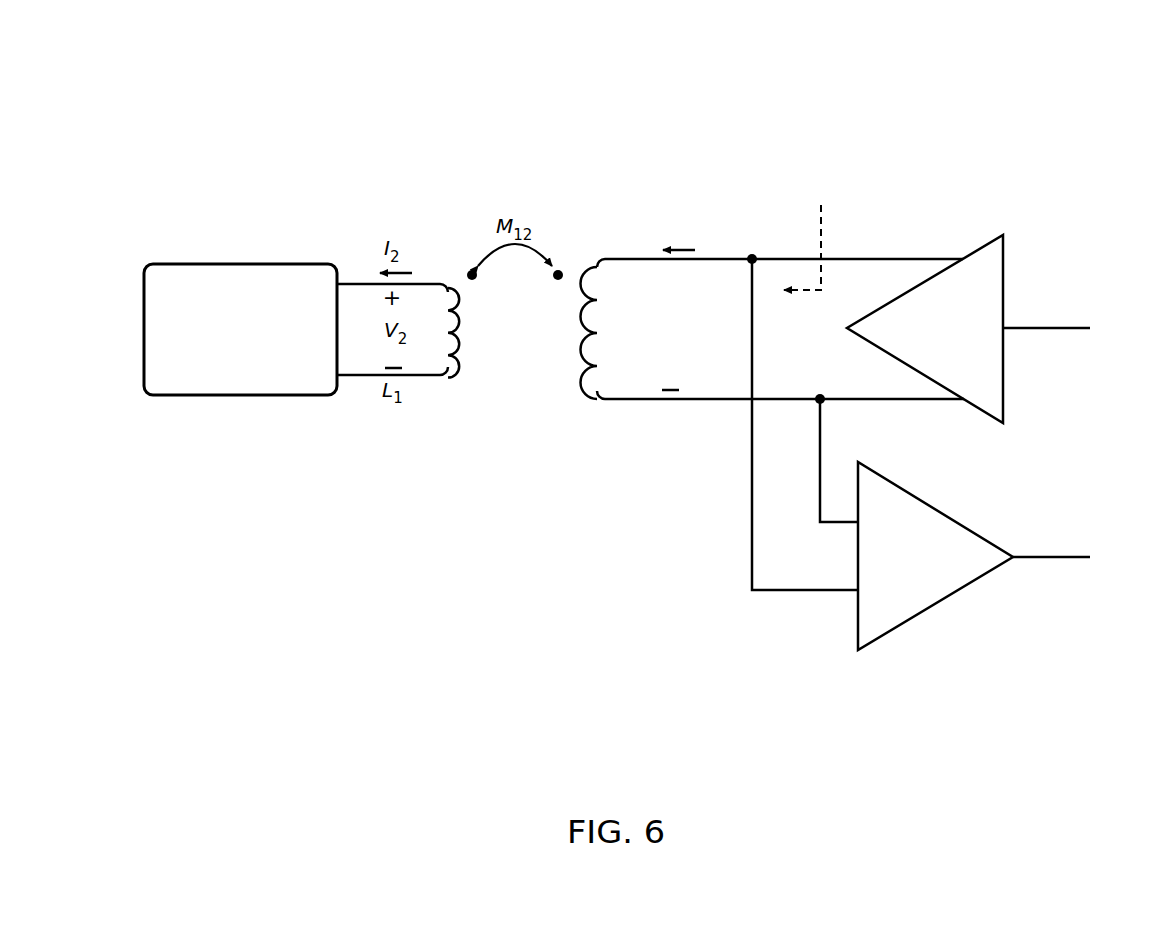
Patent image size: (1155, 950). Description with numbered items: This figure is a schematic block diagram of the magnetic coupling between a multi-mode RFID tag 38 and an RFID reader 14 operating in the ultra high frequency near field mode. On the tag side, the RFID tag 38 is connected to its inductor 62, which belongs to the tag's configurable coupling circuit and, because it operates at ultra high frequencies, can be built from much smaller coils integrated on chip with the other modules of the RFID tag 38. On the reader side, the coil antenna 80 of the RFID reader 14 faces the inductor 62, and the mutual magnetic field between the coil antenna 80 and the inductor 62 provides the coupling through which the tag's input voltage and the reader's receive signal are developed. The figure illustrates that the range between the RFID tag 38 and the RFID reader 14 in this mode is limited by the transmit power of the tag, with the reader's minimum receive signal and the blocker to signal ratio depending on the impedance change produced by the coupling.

The multi-mode RFID tag 38 is at (240, 264).
The inductor L1 62 is at (426, 284).
The coil antenna 80 is at (583, 394).
The RFID reader 14 is at (940, 118).